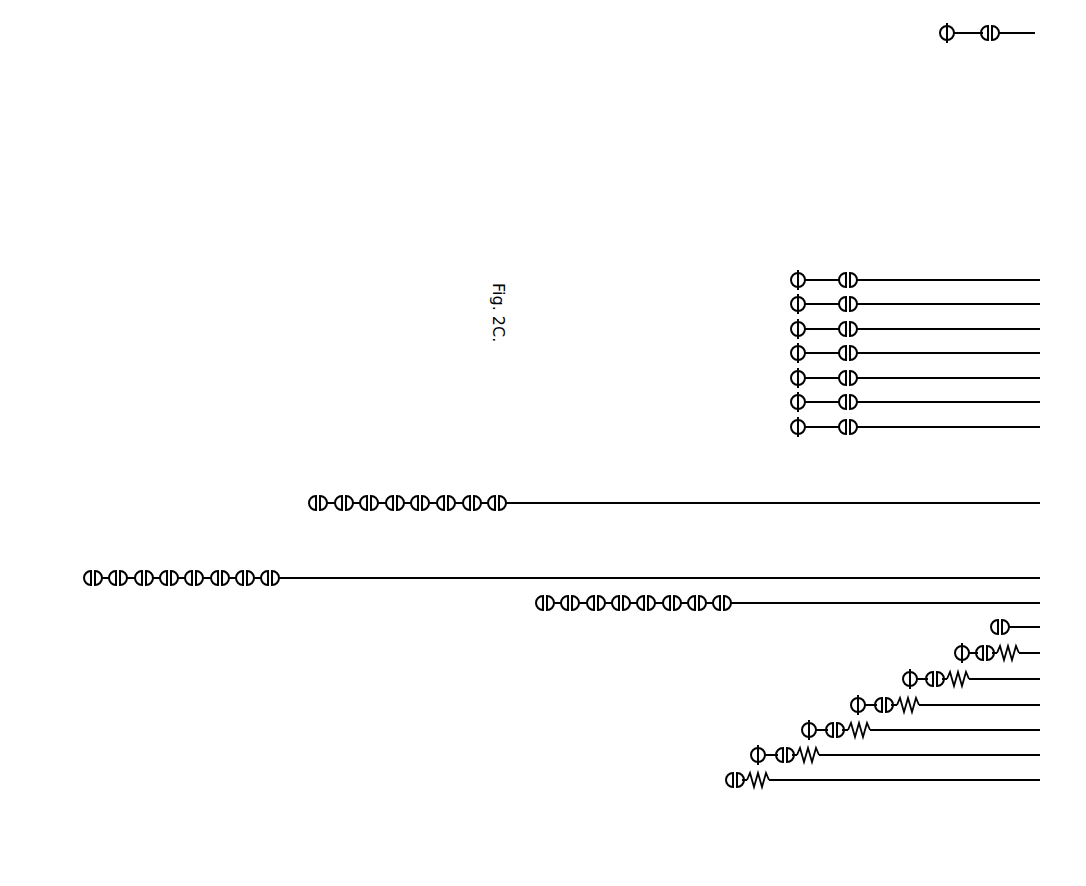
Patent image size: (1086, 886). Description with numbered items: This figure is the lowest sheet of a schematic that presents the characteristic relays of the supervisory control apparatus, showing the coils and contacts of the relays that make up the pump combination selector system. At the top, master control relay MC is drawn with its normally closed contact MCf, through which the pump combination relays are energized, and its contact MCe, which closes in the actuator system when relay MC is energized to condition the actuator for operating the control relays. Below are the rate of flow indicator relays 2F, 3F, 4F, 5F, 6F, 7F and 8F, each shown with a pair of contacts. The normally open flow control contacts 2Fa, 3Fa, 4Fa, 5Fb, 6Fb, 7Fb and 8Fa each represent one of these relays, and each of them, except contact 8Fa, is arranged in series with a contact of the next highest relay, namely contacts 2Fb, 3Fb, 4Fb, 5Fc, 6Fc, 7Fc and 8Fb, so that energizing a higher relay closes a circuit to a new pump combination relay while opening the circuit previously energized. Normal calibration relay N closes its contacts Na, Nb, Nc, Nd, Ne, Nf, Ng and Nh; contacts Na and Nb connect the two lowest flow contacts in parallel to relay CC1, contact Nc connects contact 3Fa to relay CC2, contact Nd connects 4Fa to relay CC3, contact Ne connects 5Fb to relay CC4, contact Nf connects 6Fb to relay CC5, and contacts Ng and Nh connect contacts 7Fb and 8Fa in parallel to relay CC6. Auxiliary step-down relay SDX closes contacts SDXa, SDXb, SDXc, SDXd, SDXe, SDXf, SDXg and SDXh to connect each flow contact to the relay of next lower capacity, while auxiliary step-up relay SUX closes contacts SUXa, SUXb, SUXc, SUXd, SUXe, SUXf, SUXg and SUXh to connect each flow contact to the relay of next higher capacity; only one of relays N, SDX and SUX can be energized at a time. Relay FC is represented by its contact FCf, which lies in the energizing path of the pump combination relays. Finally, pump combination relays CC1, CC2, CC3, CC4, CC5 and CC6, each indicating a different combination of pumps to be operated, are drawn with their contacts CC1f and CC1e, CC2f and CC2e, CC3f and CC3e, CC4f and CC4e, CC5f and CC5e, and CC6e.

The master control relay MC is at (1008, 32).
The normally closed contact of master control relay MCf is at (941, 30).
The contact of master control relay MCe is at (994, 27).
The rate of flow indicator relay 2F is at (933, 279).
The contact of rate of flow indicator relay 2Fb is at (793, 277).
The normally open flow control contact 2Fa is at (854, 278).
The rate of flow indicator relay 3F is at (933, 303).
The contact of rate of flow indicator relay 3Fb is at (793, 301).
The normally open flow control contact 3Fa is at (854, 302).
The rate of flow indicator relay 4F is at (933, 328).
The contact of rate of flow indicator relay 4Fb is at (793, 326).
The normally open flow control contact 4Fa is at (854, 327).
The rate of flow indicator relay 5F is at (933, 352).
The contact of rate of flow indicator relay 5Fc is at (793, 350).
The normally open flow control contact 5Fb is at (854, 351).
The rate of flow indicator relay 6F is at (933, 377).
The contact of rate of flow indicator relay 6Fc is at (793, 375).
The normally open flow control contact 6Fb is at (854, 376).
The rate of flow indicator relay 7F is at (933, 401).
The contact of rate of flow indicator relay 7Fc is at (793, 399).
The normally open flow control contact 7Fb is at (854, 400).
The rate of flow indicator relay 8F is at (933, 426).
The contact of rate of flow indicator relay 8Fb is at (793, 424).
The normally open flow control contact 8Fa is at (854, 425).
The normal calibration relay N is at (691, 502).
The contact of normal calibration relay Na is at (500, 495).
The contact of normal calibration relay Nb is at (475, 495).
The contact of normal calibration relay Nc is at (448, 495).
The contact of normal calibration relay Nd is at (422, 495).
The contact of normal calibration relay Ne is at (396, 495).
The contact of normal calibration relay Nf is at (368, 495).
The contact of normal calibration relay Ng is at (347, 496).
The contact of normal calibration relay Nh is at (313, 498).
The auxiliary step-down relay SDX is at (589, 577).
The contact of auxiliary step-down relay SDXa is at (267, 570).
The contact of auxiliary step-down relay SDXb is at (247, 586).
The contact of auxiliary step-down relay SDXc is at (230, 562).
The contact of auxiliary step-down relay SDXd is at (203, 596).
The contact of auxiliary step-down relay SDXe is at (172, 562).
The contact of auxiliary step-down relay SDXf is at (149, 596).
The contact of auxiliary step-down relay SDXg is at (116, 570).
The contact of auxiliary step-down relay SDXh is at (93, 586).
The auxiliary step-up relay SUX is at (815, 602).
The contact of auxiliary step-up relay SUXa is at (720, 595).
The contact of auxiliary step-up relay SUXb is at (699, 611).
The contact of auxiliary step-up relay SUXc is at (681, 587).
The contact of auxiliary step-up relay SUXd is at (655, 621).
The contact of auxiliary step-up relay SUXe is at (623, 587).
The contact of auxiliary step-up relay SUXf is at (601, 621).
The contact of auxiliary step-up relay SUXg is at (569, 595).
The contact of auxiliary step-up relay SUXh is at (545, 611).
The flow control relay FC is at (1035, 626).
The contact of flow control relay FCf is at (997, 619).
The pump combination relay CC1 is at (1006, 643).
The relay CC1 contact f CC1f is at (956, 648).
The relay CC1 contact e CC1e is at (985, 644).
The pump combination relay CC2 is at (960, 674).
The relay CC2 contact f CC2f is at (903, 674).
The relay CC2 contact e CC2e is at (934, 670).
The pump combination relay CC3 is at (910, 700).
The relay CC3 contact f CC3f is at (852, 697).
The relay CC3 contact e CC3e is at (888, 712).
The pump combination relay CC4 is at (867, 735).
The relay CC4 contact f CC4f is at (802, 722).
The relay CC4 contact e CC4e is at (837, 712).
The pump combination relay CC5 is at (818, 760).
The relay CC5 contact f CC5f is at (751, 751).
The relay CC5 contact e CC5e is at (785, 746).
The pump combination relay CC6 is at (768, 785).
The relay CC6 contact e CC6e is at (733, 774).